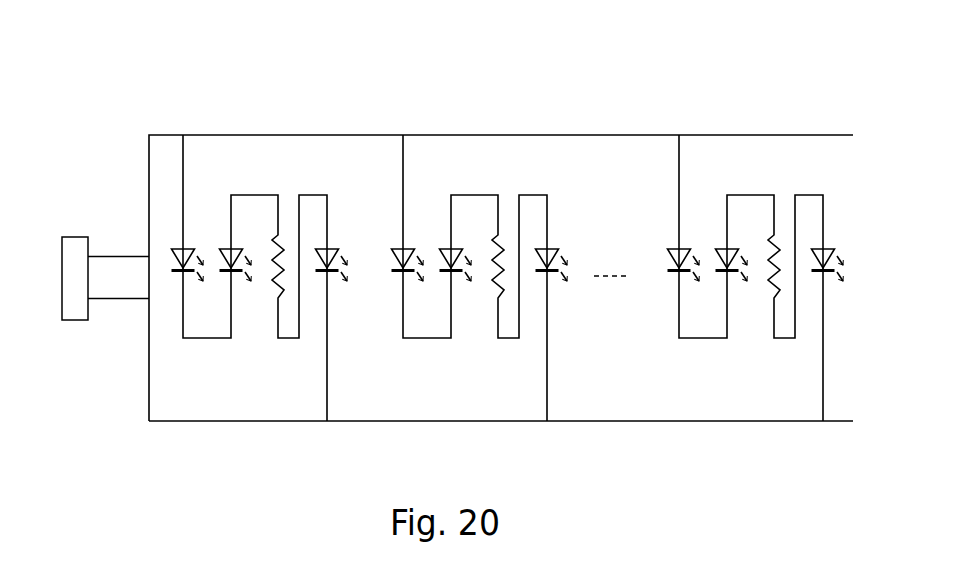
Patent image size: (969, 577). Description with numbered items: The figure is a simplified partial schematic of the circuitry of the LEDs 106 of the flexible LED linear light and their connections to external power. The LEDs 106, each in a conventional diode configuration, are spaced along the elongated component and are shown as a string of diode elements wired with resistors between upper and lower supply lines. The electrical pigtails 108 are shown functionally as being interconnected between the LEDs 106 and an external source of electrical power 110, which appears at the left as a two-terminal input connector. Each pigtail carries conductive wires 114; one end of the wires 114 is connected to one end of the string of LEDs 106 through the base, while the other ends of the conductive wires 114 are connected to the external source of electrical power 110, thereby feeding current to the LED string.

The LEDs 106 is at (333, 163).
The electrical pigtails 108 is at (117, 256).
The external source of electrical power 110 is at (90, 253).
The conductive wires 114 is at (92, 255).